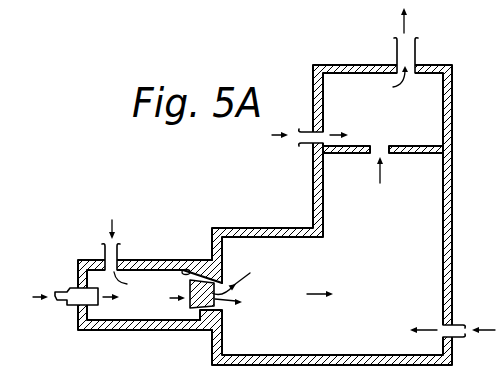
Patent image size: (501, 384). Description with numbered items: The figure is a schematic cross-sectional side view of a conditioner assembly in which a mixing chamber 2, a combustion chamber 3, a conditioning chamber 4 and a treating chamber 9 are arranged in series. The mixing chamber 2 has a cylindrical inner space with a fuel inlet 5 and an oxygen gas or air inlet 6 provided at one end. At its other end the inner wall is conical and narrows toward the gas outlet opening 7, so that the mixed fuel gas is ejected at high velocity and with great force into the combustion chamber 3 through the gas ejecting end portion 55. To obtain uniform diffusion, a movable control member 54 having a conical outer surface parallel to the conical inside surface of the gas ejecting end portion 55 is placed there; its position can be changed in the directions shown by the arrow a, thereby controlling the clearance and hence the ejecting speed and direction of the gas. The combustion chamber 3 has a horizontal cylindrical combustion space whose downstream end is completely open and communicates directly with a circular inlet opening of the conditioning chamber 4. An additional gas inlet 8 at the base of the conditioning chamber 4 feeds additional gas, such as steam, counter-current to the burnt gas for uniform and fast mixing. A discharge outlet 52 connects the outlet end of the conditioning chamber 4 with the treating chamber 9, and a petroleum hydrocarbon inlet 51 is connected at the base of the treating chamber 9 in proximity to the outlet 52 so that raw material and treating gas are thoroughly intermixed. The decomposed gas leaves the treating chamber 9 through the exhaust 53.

The mixing chamber 2 is at (137, 319).
The combustion chamber 3 is at (309, 306).
The conditioning chamber 4 is at (374, 215).
The fuel inlet 5 is at (72, 306).
The oxygen gas or air inlet 6 is at (122, 253).
The gas outlet opening 7 is at (239, 284).
The additional gas inlet 8 is at (453, 325).
The treating chamber 9 is at (435, 105).
The petroleum hydrocarbon inlet 51 is at (300, 139).
The discharge outlet 52 is at (383, 147).
The exhaust 53 is at (415, 48).
The movable control member 54 is at (200, 321).
The gas ejecting end portion 55 is at (181, 270).
The arrow a is at (167, 295).